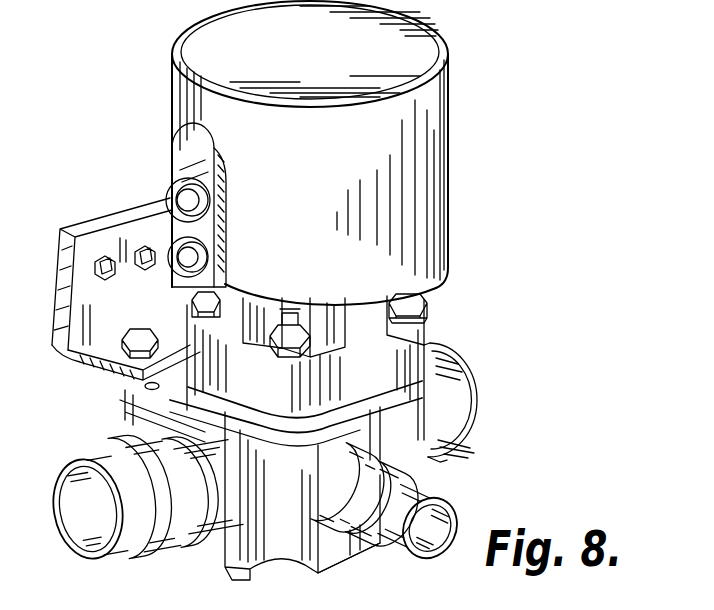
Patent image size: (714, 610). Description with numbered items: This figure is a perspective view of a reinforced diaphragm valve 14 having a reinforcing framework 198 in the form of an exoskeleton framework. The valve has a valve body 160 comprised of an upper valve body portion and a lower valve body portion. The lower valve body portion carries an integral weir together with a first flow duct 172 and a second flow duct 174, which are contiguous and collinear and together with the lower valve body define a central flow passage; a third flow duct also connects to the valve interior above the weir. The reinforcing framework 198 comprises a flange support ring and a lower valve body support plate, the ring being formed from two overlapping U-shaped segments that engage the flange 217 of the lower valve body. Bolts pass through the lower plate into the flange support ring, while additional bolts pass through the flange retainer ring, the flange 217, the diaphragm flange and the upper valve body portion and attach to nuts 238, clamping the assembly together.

The valve assembly 14 is at (292, 576).
The valve body 160 is at (430, 345).
The first flow duct 172 is at (102, 563).
The second flow duct 174 is at (462, 395).
The reinforcing framework 198 is at (145, 398).
The flange 217 is at (477, 433).
The nuts 238 is at (425, 293).